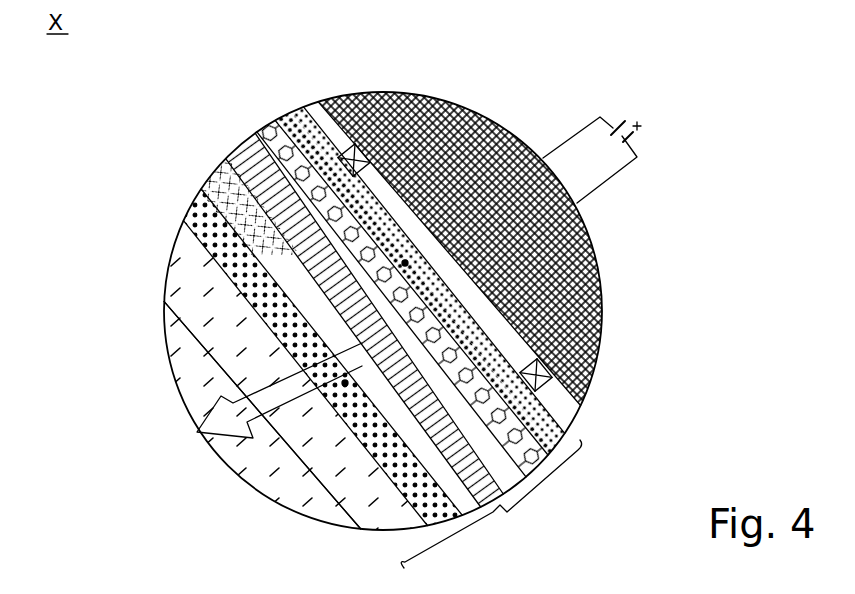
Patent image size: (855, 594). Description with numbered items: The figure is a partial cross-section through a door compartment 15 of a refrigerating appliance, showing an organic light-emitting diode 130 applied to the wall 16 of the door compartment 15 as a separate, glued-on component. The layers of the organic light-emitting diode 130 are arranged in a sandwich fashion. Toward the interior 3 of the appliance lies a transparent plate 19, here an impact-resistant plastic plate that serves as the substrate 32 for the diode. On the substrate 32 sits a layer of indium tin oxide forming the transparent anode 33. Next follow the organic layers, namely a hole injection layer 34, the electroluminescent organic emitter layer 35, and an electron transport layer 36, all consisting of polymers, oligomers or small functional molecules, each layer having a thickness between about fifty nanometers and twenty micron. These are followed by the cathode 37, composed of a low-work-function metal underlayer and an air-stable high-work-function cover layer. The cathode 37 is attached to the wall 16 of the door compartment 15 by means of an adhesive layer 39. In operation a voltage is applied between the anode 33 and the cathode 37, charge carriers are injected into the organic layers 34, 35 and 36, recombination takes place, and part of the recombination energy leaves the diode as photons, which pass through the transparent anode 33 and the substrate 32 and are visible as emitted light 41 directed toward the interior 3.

The interior 3 is at (182, 360).
The substrate 32 is at (195, 290).
The transparent plate 19 is at (262, 415).
The anode 33 is at (225, 245).
The hole injection layer 34 is at (240, 235).
The organic emitter layer 35 is at (265, 222).
The electron transport layer 36 is at (298, 170).
The cathode 37 is at (305, 152).
The adhesive layer 39 is at (340, 140).
The door compartment 15 is at (453, 95).
The wall 16 is at (510, 145).
The emitted light 41 is at (228, 420).
The organic light-emitting diode 130 is at (491, 504).